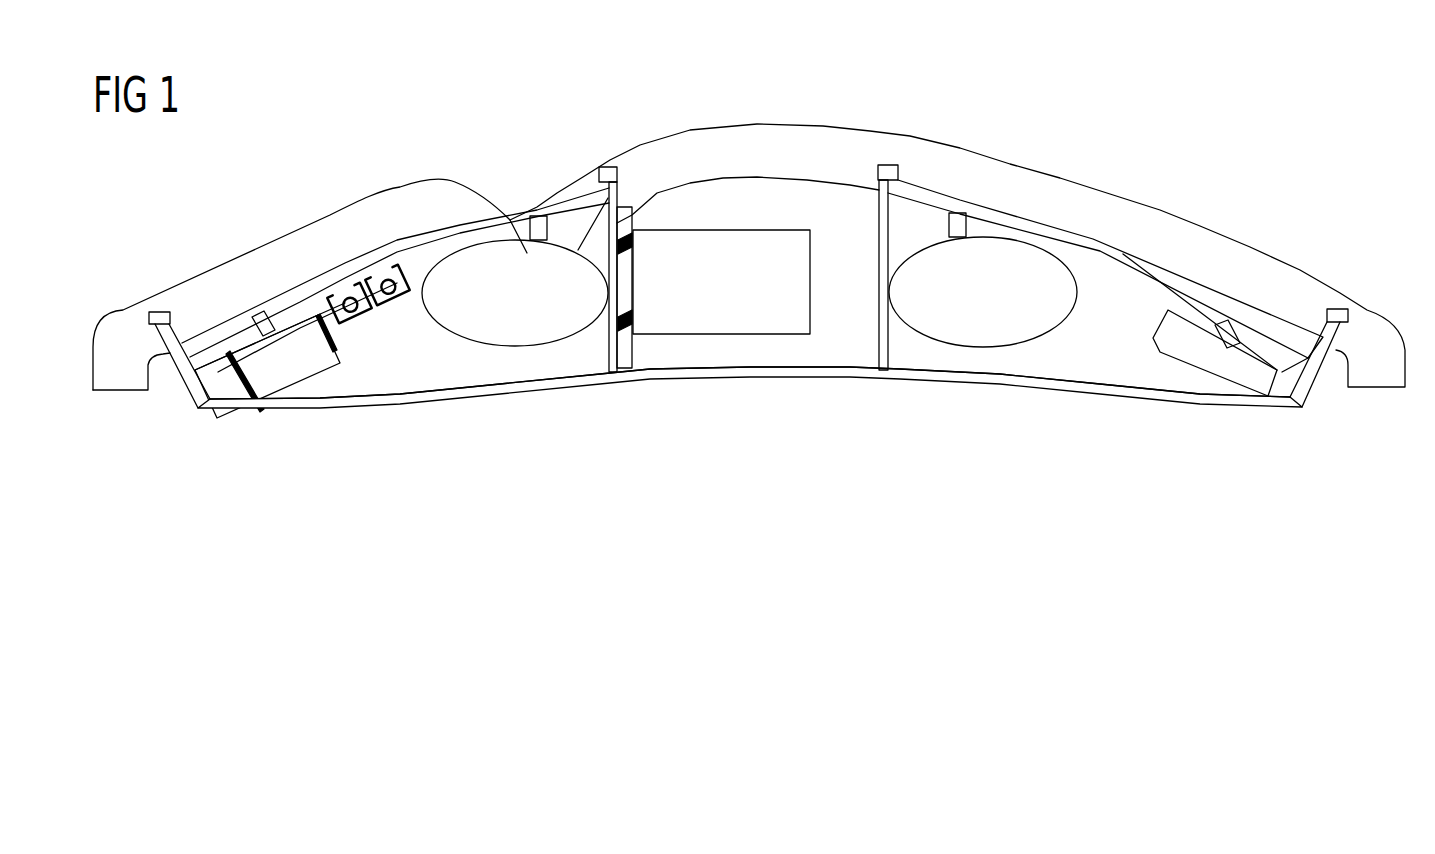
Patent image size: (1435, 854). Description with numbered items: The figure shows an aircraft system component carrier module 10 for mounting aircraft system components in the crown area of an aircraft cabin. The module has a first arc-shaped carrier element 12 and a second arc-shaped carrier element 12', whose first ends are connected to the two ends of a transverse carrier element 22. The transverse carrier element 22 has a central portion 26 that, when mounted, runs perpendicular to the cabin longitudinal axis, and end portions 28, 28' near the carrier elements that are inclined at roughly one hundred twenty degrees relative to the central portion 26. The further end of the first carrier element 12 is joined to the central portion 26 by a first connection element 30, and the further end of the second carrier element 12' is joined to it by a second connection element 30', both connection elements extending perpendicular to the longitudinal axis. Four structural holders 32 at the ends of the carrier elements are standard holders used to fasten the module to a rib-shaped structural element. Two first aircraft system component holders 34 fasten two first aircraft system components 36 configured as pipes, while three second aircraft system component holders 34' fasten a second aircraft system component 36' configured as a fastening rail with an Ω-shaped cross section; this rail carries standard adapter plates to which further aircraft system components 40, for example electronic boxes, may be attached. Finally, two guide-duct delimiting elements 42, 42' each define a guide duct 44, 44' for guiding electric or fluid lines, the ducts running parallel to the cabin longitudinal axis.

The aircraft system component carrier module 10 is at (1001, 139).
The first arc-shaped carrier element 12 is at (395, 253).
The second arc-shaped carrier element 12' is at (1105, 269).
The transverse carrier element 22 is at (797, 372).
The central portion 26 is at (710, 379).
The end portion 28 is at (172, 382).
The end portion 28' is at (1331, 379).
The first connection element 30 is at (598, 309).
The second connection element 30' is at (902, 308).
The structural holder 32 is at (160, 310).
The first aircraft system component holder 34 is at (748, 194).
The second aircraft system component holder 34' is at (746, 322).
The first aircraft system component 36 is at (749, 310).
The second aircraft system component 36' is at (751, 283).
The further aircraft system component 40 is at (290, 374).
The guide-duct delimiting element 42 is at (336, 278).
The guide-duct delimiting element 42' is at (376, 262).
The guide duct 44 is at (367, 343).
The guide duct 44' is at (411, 324).